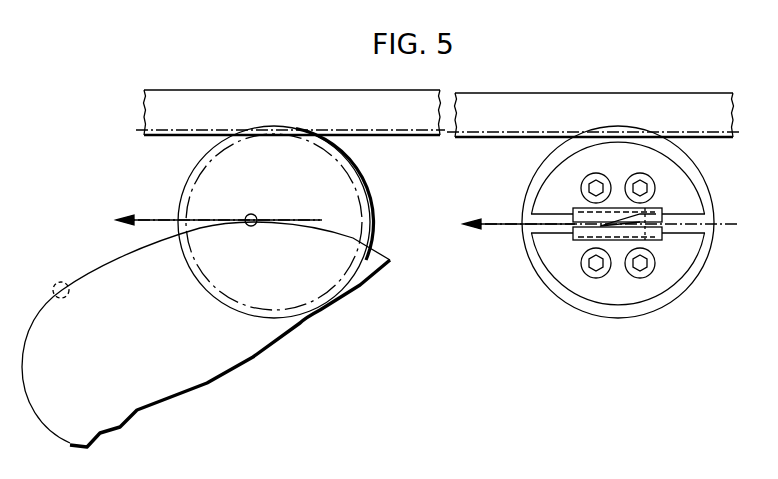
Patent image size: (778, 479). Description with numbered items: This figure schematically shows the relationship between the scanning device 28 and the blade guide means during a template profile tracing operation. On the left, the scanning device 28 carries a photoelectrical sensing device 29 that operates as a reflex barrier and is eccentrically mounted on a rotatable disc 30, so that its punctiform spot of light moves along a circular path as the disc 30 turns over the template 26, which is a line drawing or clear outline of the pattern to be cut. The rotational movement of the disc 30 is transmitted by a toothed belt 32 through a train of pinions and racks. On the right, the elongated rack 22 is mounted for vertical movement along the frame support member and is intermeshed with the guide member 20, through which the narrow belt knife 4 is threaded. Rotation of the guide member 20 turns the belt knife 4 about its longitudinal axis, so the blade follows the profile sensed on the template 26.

The belt knife 4 is at (600, 226).
The guide member 20 is at (657, 282).
The rack 22 is at (649, 103).
The template 26 is at (88, 283).
The scanning device 28 is at (148, 194).
The photoelectrical sensing device 29 is at (251, 213).
The disc 30 is at (335, 188).
The toothed belt 32 is at (190, 100).